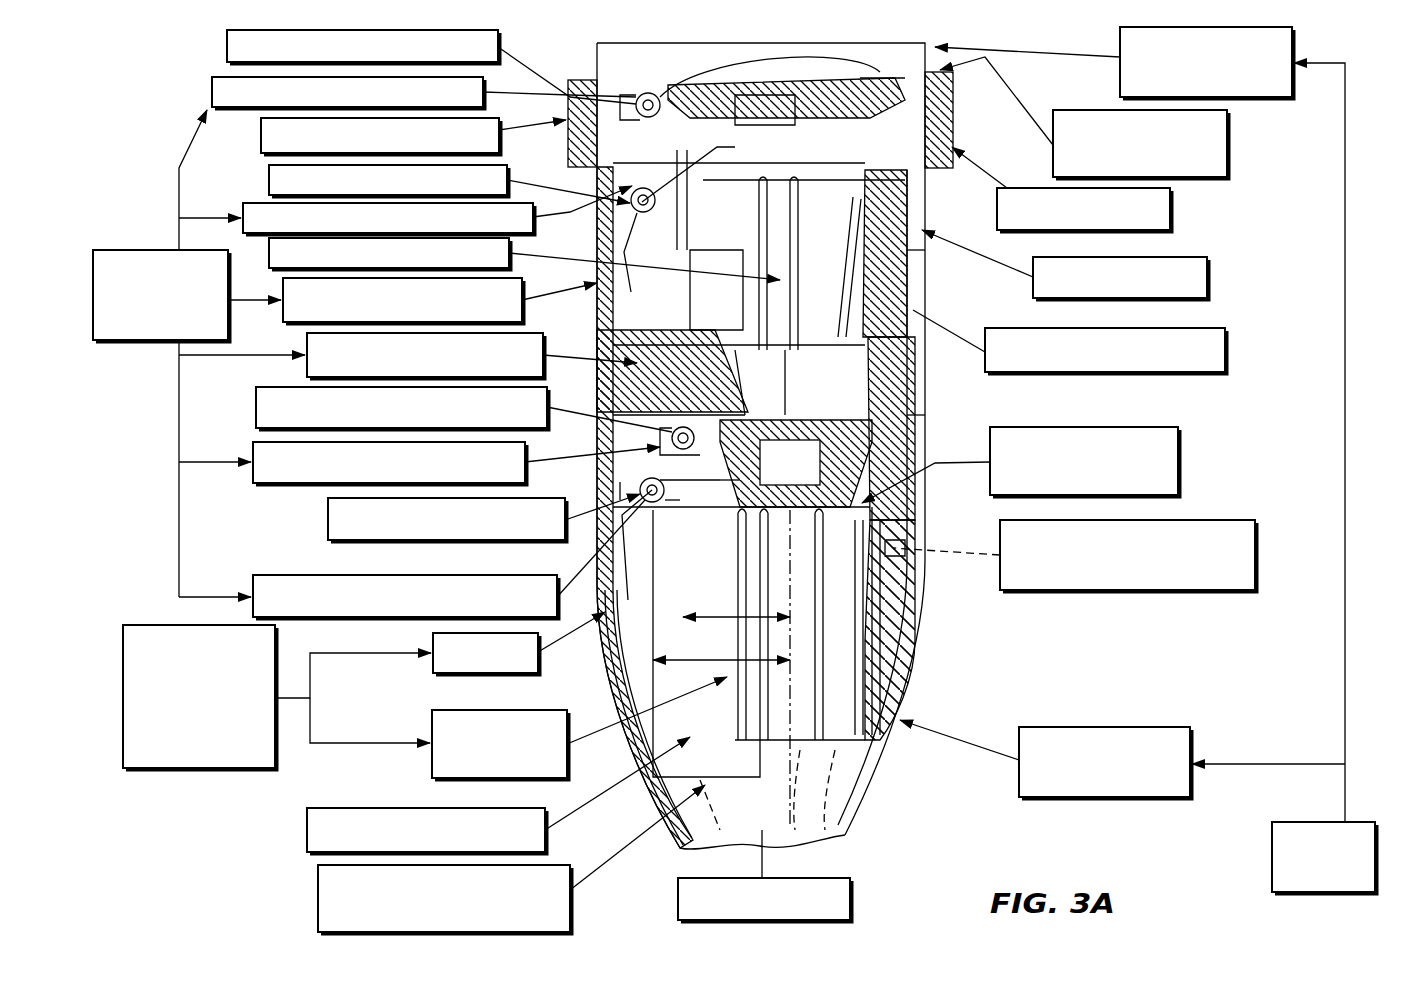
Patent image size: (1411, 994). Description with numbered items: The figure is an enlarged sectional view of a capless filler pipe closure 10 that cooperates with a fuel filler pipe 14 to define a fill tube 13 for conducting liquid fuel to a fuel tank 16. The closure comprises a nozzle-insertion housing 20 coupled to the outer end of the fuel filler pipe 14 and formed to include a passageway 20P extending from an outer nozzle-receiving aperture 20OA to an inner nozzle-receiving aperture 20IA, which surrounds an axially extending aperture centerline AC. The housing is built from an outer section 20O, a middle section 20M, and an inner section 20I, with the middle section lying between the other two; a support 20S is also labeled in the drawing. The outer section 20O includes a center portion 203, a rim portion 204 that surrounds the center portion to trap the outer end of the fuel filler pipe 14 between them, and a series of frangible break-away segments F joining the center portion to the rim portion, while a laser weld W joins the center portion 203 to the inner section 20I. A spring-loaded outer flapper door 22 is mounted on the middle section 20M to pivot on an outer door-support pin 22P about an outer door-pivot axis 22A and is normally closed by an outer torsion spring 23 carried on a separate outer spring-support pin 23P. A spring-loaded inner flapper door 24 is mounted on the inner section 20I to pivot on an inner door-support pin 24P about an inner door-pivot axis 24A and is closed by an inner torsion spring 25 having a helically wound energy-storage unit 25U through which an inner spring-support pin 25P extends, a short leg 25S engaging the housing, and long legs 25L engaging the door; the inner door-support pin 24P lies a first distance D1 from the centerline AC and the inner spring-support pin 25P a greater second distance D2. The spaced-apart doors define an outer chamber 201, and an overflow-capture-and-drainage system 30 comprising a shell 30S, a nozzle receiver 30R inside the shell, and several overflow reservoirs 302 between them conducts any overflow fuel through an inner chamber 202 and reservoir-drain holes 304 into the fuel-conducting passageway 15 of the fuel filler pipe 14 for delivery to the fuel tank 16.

The capless filler pipe closure 10 is at (1120, 58).
The fill tube 13 is at (1272, 855).
The fuel filler pipe 14 is at (1100, 797).
The fuel-conducting passageway 15 is at (318, 905).
The fuel tank 16 is at (850, 900).
The nozzle-insertion housing 20 is at (113, 250).
The outer section 20O is at (502, 138).
The outer nozzle-receiving aperture 20OA is at (873, 77).
The middle section 20M is at (522, 305).
The inner section 20I is at (543, 345).
The inner nozzle-receiving aperture 20IA is at (922, 428).
The passageway 20P is at (928, 236).
The support 20S is at (747, 397).
The outer flapper door 22 is at (762, 52).
The outer door-pivot axis 22A is at (227, 47).
The outer door-support pin 22P is at (212, 92).
The outer torsion spring 23 is at (269, 180).
The outer spring-support pin 23P is at (243, 218).
The inner flapper door 24 is at (793, 422).
The inner door-pivot axis 24A is at (256, 410).
The inner door-support pin 24P is at (253, 473).
The inner torsion spring 25 is at (328, 525).
The inner spring-support pin 25P is at (290, 575).
The short leg 25S is at (620, 487).
The long legs 25L is at (727, 480).
The helically wound energy-storage unit 25U is at (670, 503).
The overflow-capture-and-drainage system 30 is at (150, 625).
The shell 30S is at (433, 668).
The nozzle receiver 30R is at (432, 765).
The outer chamber 201 is at (1225, 350).
The inner chamber 202 is at (307, 827).
The center portion 203 is at (269, 253).
The rim portion 204 is at (1170, 205).
The overflow reservoirs 302 is at (1178, 465).
The reservoir-drain hole 304 is at (1255, 550).
The frangible break-away segments F is at (1227, 150).
The laser weld W is at (1207, 278).
The aperture centerline AC is at (800, 755).
The first distance D1 is at (713, 617).
The second distance D2 is at (686, 660).